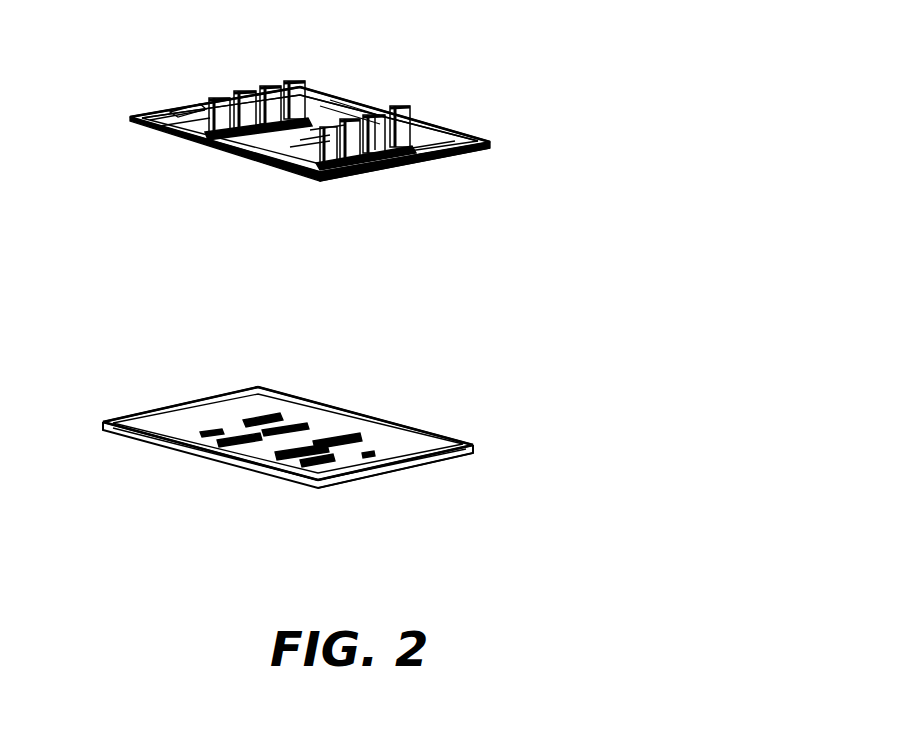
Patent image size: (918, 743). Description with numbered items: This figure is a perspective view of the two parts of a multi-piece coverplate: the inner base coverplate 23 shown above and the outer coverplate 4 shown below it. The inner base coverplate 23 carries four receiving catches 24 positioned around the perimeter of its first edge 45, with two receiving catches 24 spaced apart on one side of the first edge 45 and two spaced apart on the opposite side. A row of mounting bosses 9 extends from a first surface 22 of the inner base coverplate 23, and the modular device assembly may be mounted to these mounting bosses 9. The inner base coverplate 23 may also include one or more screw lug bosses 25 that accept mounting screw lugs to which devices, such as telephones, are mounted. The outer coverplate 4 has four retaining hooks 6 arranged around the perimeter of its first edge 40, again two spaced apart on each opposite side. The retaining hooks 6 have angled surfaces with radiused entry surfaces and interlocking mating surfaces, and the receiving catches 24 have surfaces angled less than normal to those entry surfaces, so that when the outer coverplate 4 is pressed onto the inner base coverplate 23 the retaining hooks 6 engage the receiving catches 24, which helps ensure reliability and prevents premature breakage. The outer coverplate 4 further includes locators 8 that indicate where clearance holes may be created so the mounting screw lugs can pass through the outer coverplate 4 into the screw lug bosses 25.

The inner base coverplate 23 is at (522, 62).
The first surface 22 is at (162, 135).
The receiving catches 24 is at (177, 110).
The first edge 45 is at (197, 107).
The screw lug bosses 25 is at (423, 163).
The mounting bosses 9 is at (301, 90).
The outer coverplate 4 is at (474, 342).
The retaining hooks 6 is at (150, 408).
The locators 8 is at (197, 417).
The first edge 40 is at (407, 465).